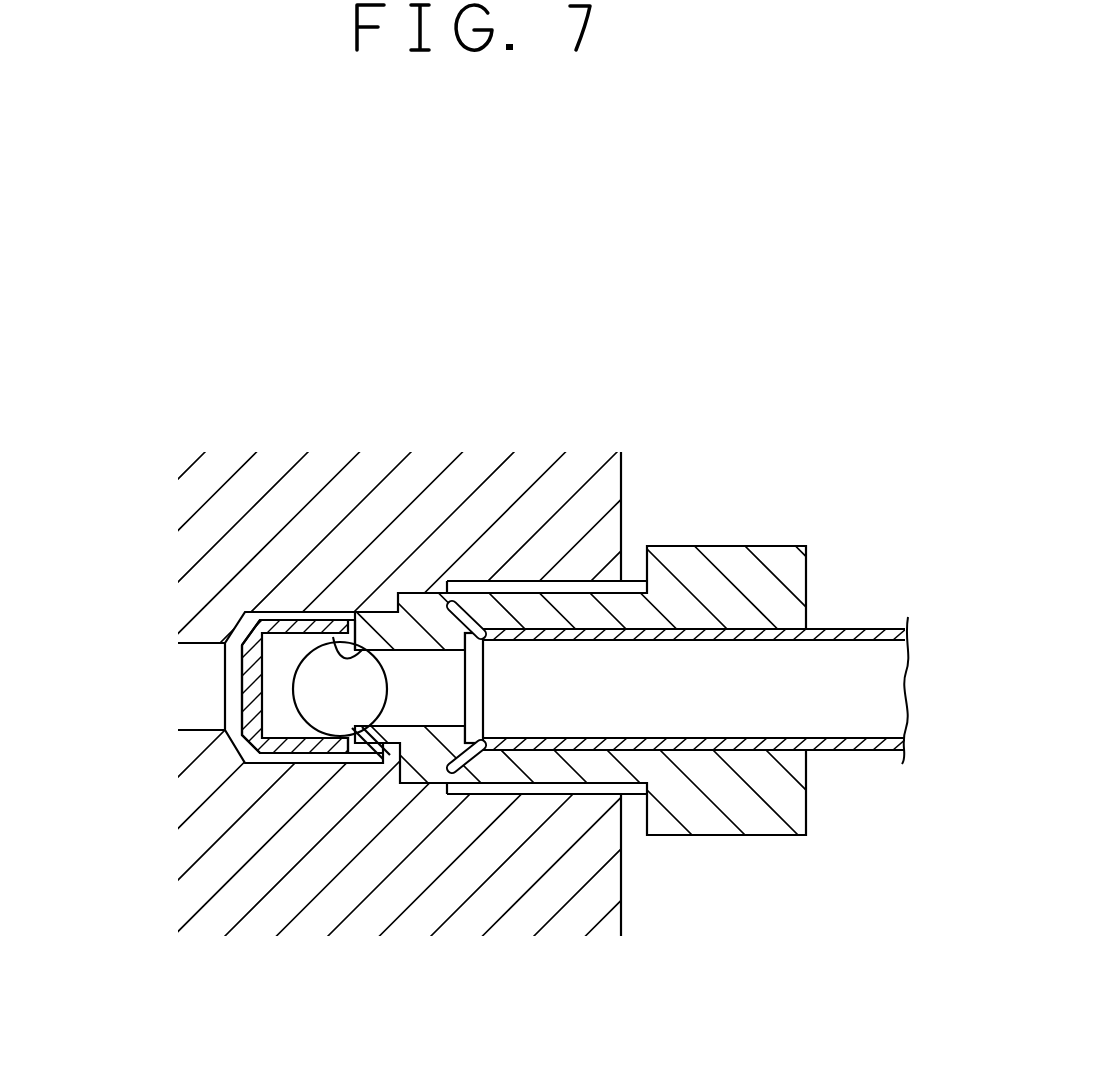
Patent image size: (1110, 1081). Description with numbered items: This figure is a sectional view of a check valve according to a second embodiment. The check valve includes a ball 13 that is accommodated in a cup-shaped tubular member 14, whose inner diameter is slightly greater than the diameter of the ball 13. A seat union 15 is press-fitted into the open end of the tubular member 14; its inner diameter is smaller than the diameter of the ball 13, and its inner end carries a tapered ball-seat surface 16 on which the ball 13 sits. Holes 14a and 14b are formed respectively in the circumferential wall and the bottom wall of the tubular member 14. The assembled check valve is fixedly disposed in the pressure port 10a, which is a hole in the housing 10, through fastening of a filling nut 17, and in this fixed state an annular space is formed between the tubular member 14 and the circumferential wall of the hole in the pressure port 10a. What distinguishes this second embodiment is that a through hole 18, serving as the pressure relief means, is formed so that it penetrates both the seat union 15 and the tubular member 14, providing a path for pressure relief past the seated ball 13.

The housing body 10 is at (542, 911).
The pressure port 10a is at (682, 893).
The ball 13 is at (310, 680).
The tubular member 14 is at (272, 752).
The hole 14a is at (320, 742).
The hole 14b is at (257, 707).
The seat union 15 is at (420, 593).
The ball-seat surface 16 is at (333, 637).
The filling nut 17 is at (712, 546).
The through hole 18 is at (369, 760).